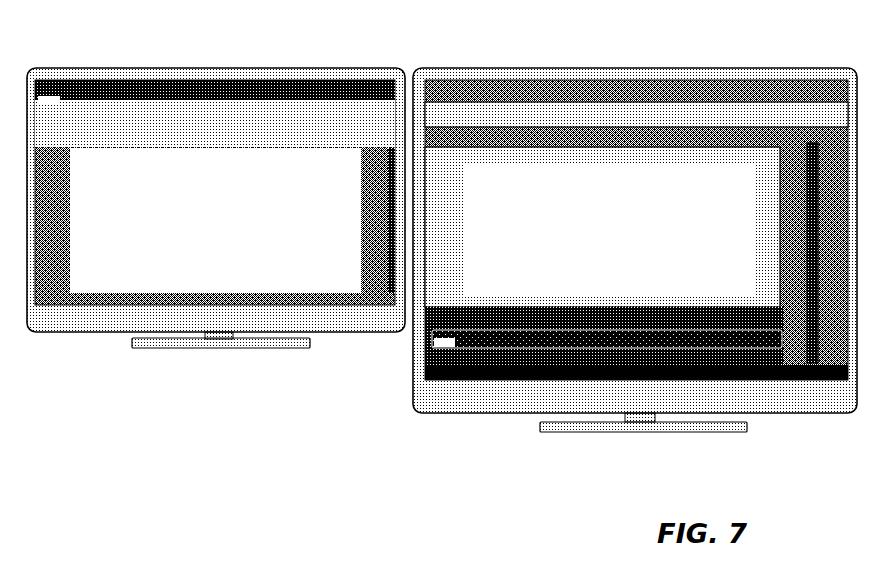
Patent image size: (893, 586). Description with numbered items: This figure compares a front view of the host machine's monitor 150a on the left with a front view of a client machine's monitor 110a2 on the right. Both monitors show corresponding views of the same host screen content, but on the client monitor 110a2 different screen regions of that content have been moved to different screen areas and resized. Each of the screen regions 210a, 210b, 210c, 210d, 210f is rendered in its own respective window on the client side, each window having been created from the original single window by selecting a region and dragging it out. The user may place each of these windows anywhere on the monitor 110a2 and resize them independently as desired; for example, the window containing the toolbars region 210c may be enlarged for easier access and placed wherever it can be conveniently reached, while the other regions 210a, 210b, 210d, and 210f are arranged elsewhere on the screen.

The monitor of the host machine 150a is at (200, 75).
The monitor of the client machine 110a2 is at (575, 75).
The screen region 210a is at (488, 372).
The screen region 210b is at (432, 341).
The screen region (toolbars) 210c is at (803, 110).
The screen region 210d is at (578, 238).
The screen region 210f is at (805, 371).